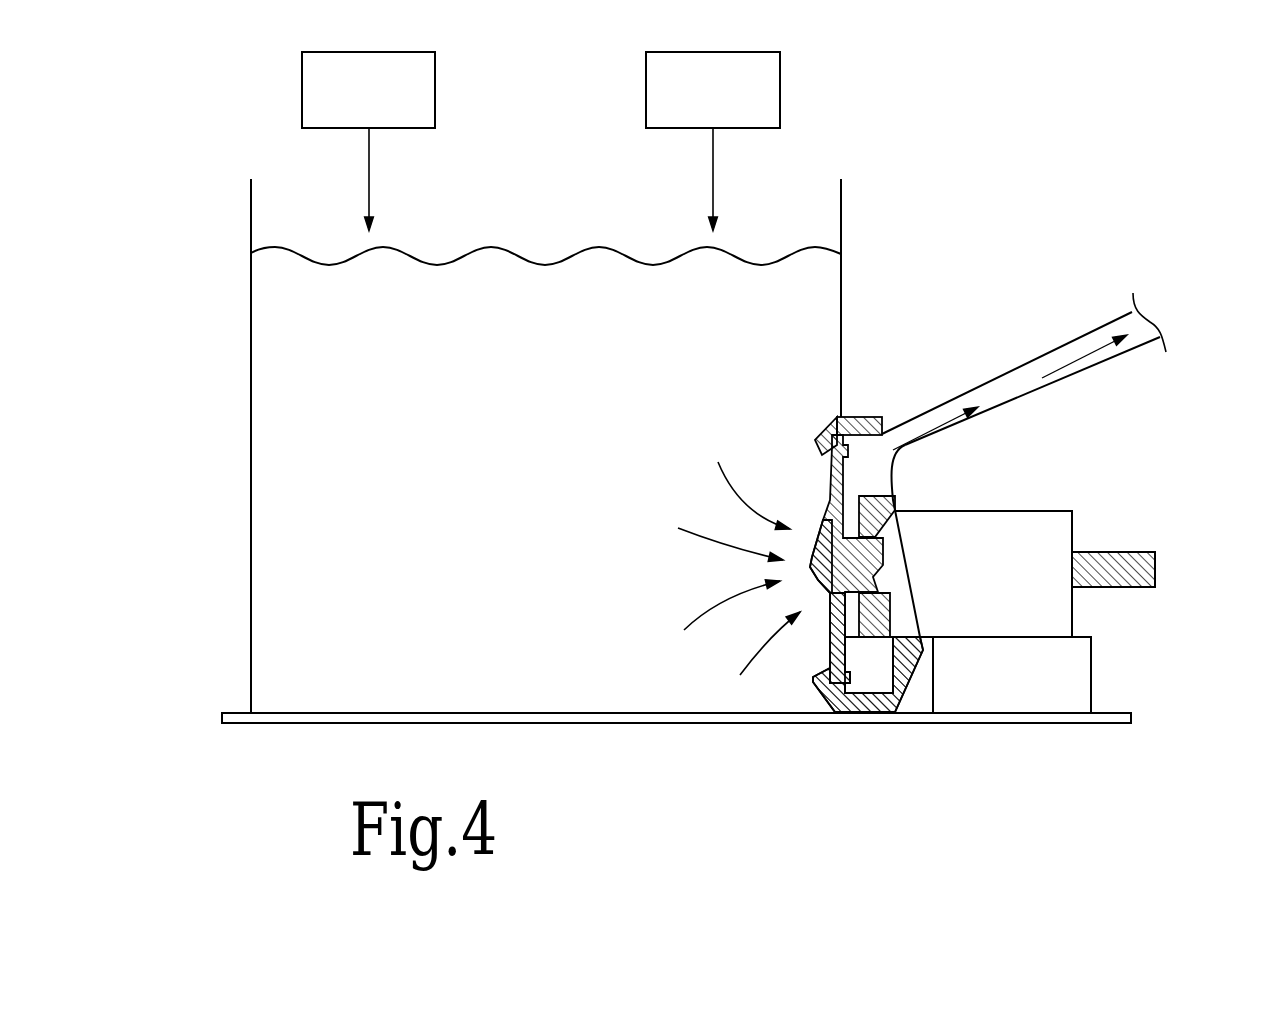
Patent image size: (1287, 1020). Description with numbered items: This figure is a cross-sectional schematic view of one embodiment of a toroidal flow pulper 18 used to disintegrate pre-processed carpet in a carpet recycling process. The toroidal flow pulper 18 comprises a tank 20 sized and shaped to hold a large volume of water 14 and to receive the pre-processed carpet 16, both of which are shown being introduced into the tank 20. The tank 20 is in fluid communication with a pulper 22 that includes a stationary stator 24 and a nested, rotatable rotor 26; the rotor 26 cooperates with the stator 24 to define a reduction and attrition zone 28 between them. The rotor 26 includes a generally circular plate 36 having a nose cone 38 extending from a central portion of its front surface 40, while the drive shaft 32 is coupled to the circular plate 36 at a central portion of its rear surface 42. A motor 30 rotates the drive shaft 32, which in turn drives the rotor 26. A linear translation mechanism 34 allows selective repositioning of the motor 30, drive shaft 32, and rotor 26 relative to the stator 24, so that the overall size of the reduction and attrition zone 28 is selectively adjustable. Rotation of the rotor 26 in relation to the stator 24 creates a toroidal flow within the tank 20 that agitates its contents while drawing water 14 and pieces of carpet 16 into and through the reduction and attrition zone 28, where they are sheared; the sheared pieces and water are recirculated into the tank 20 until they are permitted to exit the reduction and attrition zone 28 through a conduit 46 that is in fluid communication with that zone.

The water 14 is at (302, 82).
The pre-processed carpet 16 is at (646, 83).
The toroidal flow pulper 18 is at (1025, 249).
The tank 20 is at (251, 428).
The pulper 22 is at (1000, 482).
The stator 24 is at (815, 440).
The rotor 26 is at (827, 523).
The reduction and attrition zone 28 is at (858, 690).
The motor 30 is at (1043, 512).
The drive shaft 32 is at (1130, 552).
The linear translation mechanism 34 is at (1091, 673).
The circular plate 36 is at (848, 690).
The nose cone 38 is at (812, 582).
The front surface 40 is at (867, 417).
The rear surface 42 is at (877, 662).
The conduit 46 is at (1108, 323).